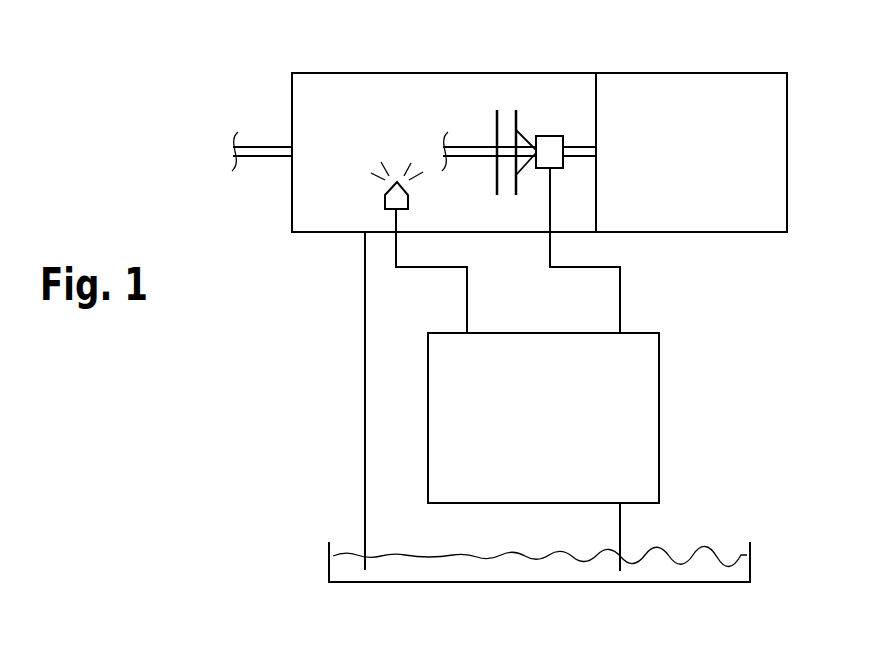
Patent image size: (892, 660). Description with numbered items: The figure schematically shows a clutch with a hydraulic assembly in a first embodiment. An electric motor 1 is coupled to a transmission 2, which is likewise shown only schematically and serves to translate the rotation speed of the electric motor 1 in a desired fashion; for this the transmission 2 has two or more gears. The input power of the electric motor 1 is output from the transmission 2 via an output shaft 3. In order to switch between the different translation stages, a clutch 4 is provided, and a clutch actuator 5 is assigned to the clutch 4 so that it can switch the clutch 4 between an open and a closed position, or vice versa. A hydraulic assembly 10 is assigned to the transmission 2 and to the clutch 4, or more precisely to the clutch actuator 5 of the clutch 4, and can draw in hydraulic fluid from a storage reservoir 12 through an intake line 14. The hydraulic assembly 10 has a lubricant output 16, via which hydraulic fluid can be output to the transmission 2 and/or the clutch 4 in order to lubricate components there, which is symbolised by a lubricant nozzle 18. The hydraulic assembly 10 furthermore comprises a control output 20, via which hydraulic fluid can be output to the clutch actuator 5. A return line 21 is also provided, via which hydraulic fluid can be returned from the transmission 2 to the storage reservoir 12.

The electric motor 1 is at (685, 130).
The transmission 2 is at (395, 103).
The output shaft 3 is at (272, 150).
The clutch 4 is at (504, 80).
The clutch actuator 5 is at (548, 145).
The hydraulic assembly 10 is at (610, 411).
The storage reservoir 12 is at (752, 567).
The intake line 14 is at (622, 527).
The lubricant output 16 is at (467, 332).
The lubricant nozzle 18 is at (385, 200).
The control output 20 is at (620, 332).
The return line 21 is at (363, 395).